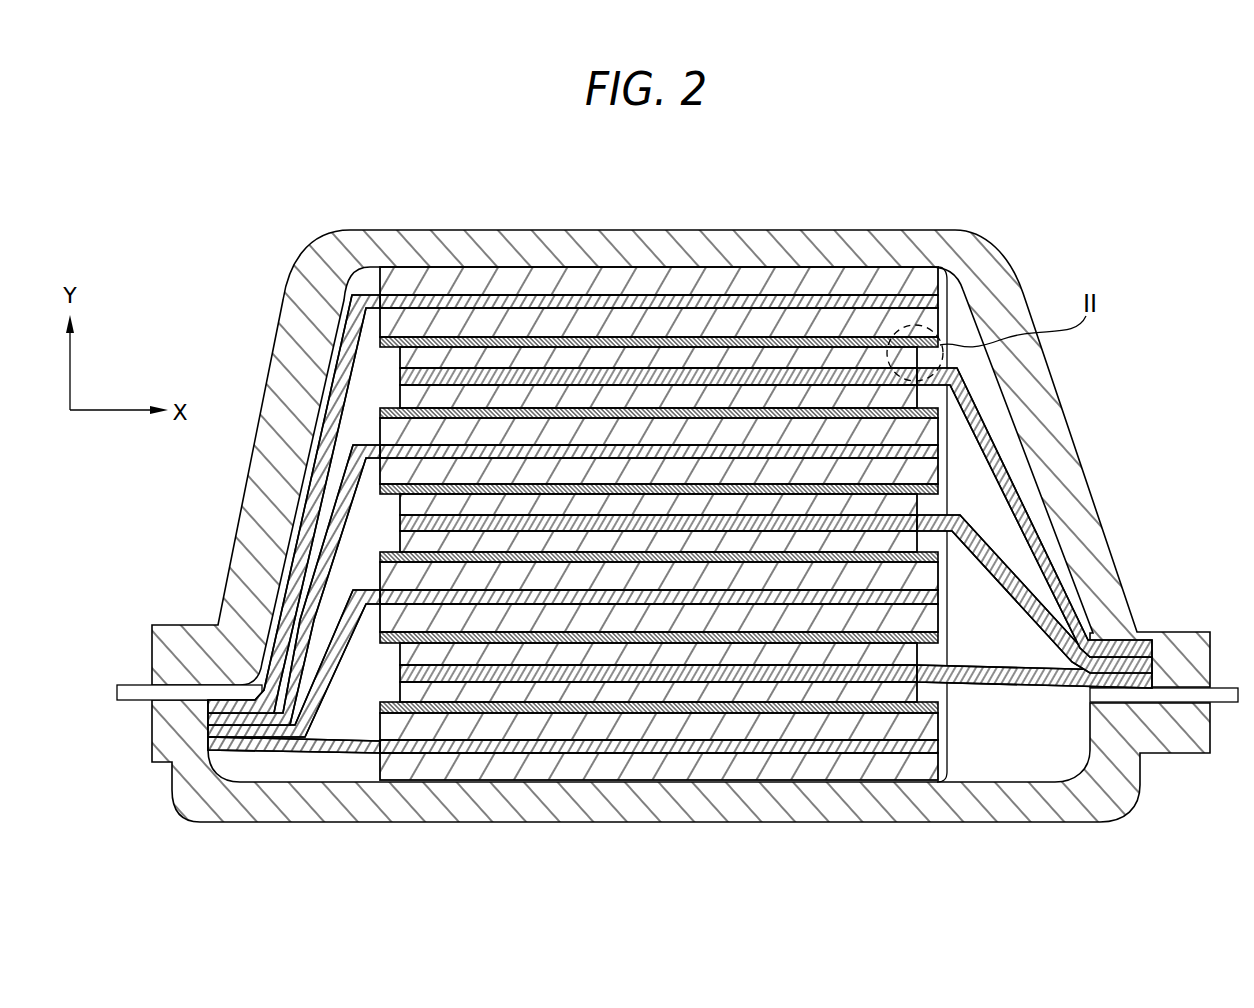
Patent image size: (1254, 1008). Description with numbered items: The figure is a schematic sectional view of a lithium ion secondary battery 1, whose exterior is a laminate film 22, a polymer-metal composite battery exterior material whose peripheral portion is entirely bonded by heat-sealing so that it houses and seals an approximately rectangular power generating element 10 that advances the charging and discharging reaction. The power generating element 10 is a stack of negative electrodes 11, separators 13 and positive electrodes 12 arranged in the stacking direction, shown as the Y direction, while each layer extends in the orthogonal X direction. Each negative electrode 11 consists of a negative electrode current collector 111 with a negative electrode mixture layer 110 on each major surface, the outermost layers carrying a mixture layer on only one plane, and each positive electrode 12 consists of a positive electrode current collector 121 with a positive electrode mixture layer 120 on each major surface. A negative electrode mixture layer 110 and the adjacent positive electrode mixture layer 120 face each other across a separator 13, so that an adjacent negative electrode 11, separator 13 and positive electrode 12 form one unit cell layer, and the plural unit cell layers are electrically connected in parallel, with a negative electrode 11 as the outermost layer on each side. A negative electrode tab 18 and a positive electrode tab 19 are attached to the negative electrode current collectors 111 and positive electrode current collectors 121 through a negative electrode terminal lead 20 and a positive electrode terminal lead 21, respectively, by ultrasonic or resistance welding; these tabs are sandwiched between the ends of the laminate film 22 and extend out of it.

The lithium ion secondary battery 1 is at (1004, 230).
The power generating element 10 is at (946, 706).
The negative electrode 11 is at (502, 168).
The negative electrode mixture layer 110 is at (512, 287).
The negative electrode current collector 111 is at (567, 298).
The positive electrode 12 is at (738, 168).
The positive electrode mixture layer 120 is at (750, 360).
The positive electrode current collector 121 is at (808, 369).
The separator 13 is at (690, 336).
The negative electrode tab 18 is at (138, 690).
The positive electrode tab 19 is at (1215, 686).
The negative electrode terminal lead 20 is at (293, 567).
The positive electrode terminal lead 21 is at (1070, 577).
The laminate film 22 is at (1045, 375).